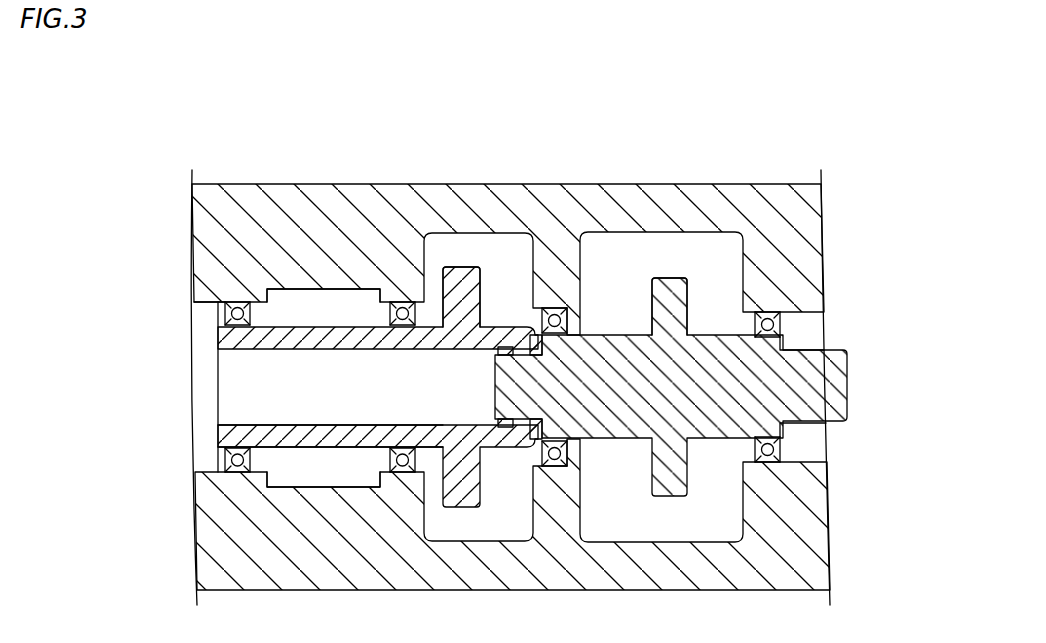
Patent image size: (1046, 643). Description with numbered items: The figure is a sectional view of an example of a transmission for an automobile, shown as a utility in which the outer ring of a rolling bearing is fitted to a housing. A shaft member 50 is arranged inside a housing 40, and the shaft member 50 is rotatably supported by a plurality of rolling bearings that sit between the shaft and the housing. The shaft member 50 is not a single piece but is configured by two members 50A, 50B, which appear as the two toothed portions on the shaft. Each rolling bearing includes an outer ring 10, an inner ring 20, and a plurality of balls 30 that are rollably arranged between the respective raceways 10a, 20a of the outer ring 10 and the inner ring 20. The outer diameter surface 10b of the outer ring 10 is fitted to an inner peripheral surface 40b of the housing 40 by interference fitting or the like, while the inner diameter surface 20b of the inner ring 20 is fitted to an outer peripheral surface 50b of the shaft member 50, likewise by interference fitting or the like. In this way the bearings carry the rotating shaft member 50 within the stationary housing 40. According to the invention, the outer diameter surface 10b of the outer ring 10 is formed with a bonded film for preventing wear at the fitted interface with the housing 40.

The outer ring 10 is at (238, 302).
The raceway 10a is at (267, 300).
The outer diameter surface 10b is at (235, 474).
The inner ring 20 is at (220, 322).
The raceway 20a is at (227, 313).
The inner diameter surface 20b is at (217, 433).
The balls 30 is at (225, 302).
The housing 40 is at (555, 592).
The inner peripheral surface 40b is at (225, 458).
The shaft member 50 is at (640, 142).
The first member of shaft member 50A is at (458, 282).
The second member of shaft member 50B is at (673, 280).
The outer peripheral surface 50b is at (248, 460).